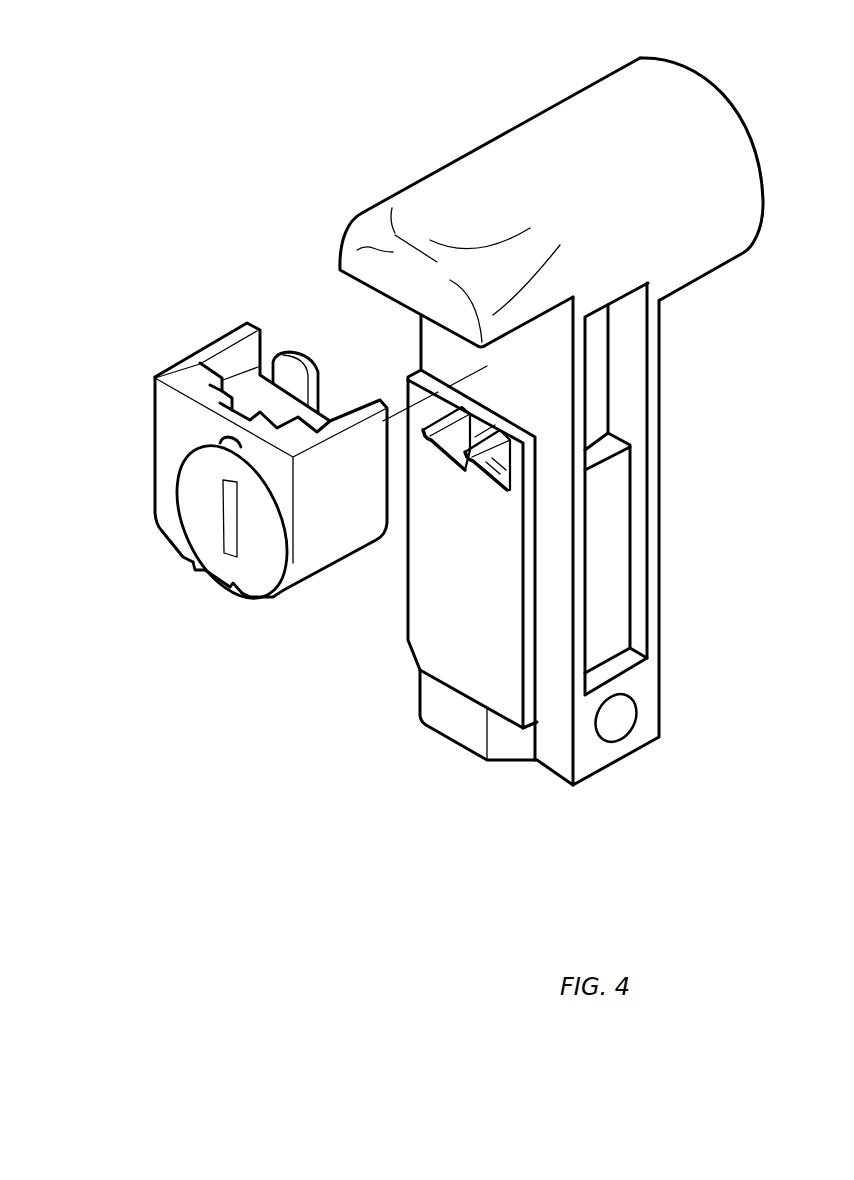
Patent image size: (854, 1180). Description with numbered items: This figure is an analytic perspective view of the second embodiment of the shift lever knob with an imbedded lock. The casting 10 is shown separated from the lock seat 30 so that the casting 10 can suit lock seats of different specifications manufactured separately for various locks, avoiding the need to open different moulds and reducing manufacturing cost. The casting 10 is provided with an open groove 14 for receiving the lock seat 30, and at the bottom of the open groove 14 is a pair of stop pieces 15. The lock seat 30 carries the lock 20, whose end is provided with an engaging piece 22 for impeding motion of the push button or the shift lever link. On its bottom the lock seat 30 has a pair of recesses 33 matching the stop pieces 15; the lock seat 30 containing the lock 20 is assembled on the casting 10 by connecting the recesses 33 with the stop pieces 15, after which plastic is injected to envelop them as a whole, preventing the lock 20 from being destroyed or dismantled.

The casting 10 is at (550, 138).
The open groove 14 is at (393, 337).
The stop pieces 15 is at (490, 480).
The lock 20 is at (192, 507).
The engaging piece 22 is at (293, 350).
The lock seat 30 is at (175, 398).
The recesses 33 is at (195, 563).